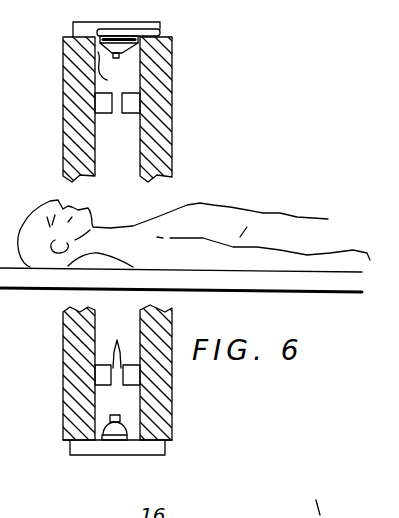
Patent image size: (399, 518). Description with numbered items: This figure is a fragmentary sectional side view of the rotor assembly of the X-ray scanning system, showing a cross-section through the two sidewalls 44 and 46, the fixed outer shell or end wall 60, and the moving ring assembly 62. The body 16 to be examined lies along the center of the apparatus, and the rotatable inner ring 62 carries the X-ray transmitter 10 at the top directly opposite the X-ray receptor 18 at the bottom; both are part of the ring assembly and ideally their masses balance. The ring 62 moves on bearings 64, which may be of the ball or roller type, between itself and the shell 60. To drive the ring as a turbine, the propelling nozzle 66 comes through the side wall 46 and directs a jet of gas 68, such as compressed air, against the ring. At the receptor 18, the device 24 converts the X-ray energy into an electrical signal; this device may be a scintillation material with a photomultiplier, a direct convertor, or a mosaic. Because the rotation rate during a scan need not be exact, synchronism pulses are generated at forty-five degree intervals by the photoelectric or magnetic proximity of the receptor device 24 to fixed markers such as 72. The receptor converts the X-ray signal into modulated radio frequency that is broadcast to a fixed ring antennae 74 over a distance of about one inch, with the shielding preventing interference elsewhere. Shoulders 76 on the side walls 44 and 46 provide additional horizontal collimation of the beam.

The X-ray transmitter 10 is at (128, 52).
The body 16 is at (265, 212).
The X-ray receptor 18 is at (127, 425).
The device 24 is at (111, 414).
The sidewall 44 is at (165, 128).
The sidewall 46 is at (64, 158).
The fixed outer shell 60 is at (163, 37).
The rotatable inner ring 62 is at (138, 46).
The bearings 64 is at (97, 38).
The nozzle 66 is at (97, 54).
The jet of gas 68 is at (116, 80).
The fixed markers 72 is at (98, 444).
The fixed ring antennae 74 is at (160, 31).
The shoulders 76 is at (118, 343).